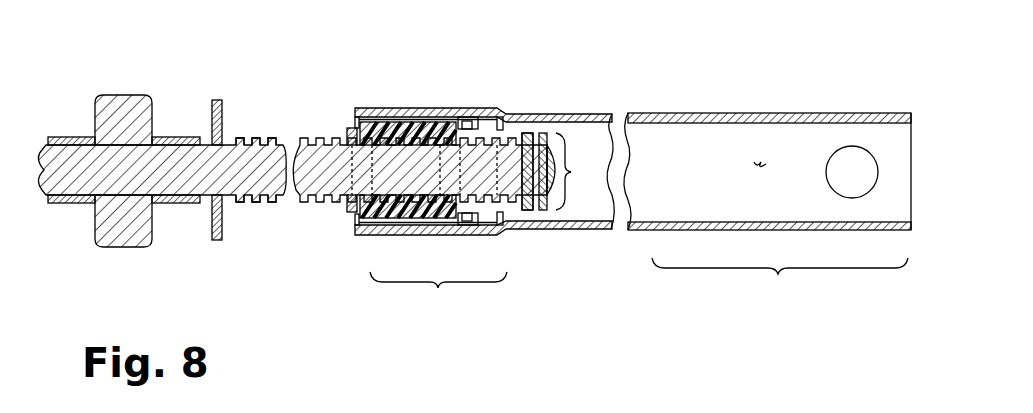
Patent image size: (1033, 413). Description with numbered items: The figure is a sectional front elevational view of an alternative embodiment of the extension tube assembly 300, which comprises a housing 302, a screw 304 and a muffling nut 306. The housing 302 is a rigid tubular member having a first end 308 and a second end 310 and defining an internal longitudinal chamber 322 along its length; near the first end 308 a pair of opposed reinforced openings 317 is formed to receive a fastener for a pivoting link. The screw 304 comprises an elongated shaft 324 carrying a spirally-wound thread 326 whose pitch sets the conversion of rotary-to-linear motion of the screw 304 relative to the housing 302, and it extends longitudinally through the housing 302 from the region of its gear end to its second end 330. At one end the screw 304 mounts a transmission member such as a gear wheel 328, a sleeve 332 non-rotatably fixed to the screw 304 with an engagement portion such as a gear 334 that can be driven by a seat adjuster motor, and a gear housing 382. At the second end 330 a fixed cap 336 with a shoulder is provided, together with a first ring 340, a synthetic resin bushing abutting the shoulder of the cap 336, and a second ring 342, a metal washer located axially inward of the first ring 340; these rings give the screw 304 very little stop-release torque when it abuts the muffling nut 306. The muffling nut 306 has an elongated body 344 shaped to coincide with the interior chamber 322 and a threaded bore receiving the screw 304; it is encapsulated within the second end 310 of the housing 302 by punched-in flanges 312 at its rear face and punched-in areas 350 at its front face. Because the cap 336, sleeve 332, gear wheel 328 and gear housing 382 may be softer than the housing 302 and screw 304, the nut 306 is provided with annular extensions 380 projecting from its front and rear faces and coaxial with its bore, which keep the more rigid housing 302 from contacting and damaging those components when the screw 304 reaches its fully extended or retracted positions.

The extension tube assembly 300 is at (570, 66).
The housing 302 is at (681, 111).
The screw 304 is at (241, 134).
The muffling nut 306 is at (402, 111).
The first end 308 is at (780, 282).
The second end 310 is at (438, 291).
The inwardly-extending flange 312 is at (450, 122).
The reinforced opening 317 is at (856, 172).
The internal longitudinal chamber 322 is at (760, 160).
The elongated shaft 324 is at (263, 190).
The spirally-wound thread 326 is at (255, 137).
The gear wheel 328 is at (130, 92).
The second end 330 is at (577, 171).
The sleeve 332 is at (175, 205).
The gear 334 is at (146, 248).
The cap 336 is at (543, 212).
The first ring 340 is at (527, 212).
The second ring 342 is at (526, 210).
The elongated body 344 is at (423, 118).
The punched-in area 350 is at (352, 128).
The extension 380 is at (349, 214).
The gear housing 382 is at (213, 100).